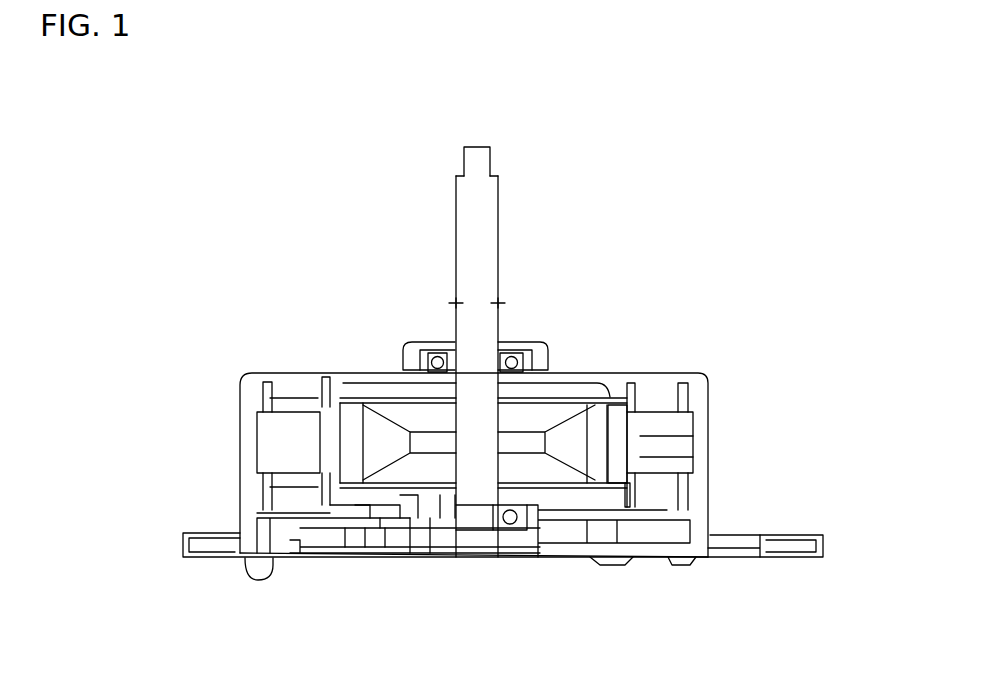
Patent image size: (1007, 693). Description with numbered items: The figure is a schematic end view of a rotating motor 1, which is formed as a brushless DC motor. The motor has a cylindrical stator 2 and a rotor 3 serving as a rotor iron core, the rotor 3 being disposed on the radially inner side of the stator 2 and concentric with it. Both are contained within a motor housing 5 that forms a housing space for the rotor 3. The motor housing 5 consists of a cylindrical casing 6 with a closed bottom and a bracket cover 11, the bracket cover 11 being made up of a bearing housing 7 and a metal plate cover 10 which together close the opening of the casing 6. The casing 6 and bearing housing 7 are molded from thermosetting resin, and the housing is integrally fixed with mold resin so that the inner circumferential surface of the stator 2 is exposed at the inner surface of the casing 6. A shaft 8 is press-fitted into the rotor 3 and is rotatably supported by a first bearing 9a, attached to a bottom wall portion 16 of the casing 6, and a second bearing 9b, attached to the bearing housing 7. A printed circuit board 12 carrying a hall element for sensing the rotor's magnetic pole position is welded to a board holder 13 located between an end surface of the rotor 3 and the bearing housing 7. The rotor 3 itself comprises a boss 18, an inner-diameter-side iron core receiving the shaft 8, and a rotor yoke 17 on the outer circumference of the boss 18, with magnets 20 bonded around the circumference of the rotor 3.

The rotating motor 1 is at (310, 197).
The cylindrical stator 2 is at (230, 408).
The rotor 3 is at (398, 415).
The motor housing 5 is at (90, 405).
The casing 6 is at (238, 440).
The bearing housing 7 is at (252, 522).
The shaft 8 is at (487, 243).
The first bearing 9a is at (555, 374).
The second bearing 9b is at (530, 520).
The metal plate cover 10 is at (190, 543).
The bracket cover 11 is at (135, 458).
The printed circuit board 12 is at (375, 525).
The board holder 13 is at (325, 520).
The bottom wall portion 16 is at (530, 350).
The rotor yoke 17 is at (695, 465).
The boss 18 is at (418, 490).
The magnets 20 is at (695, 435).